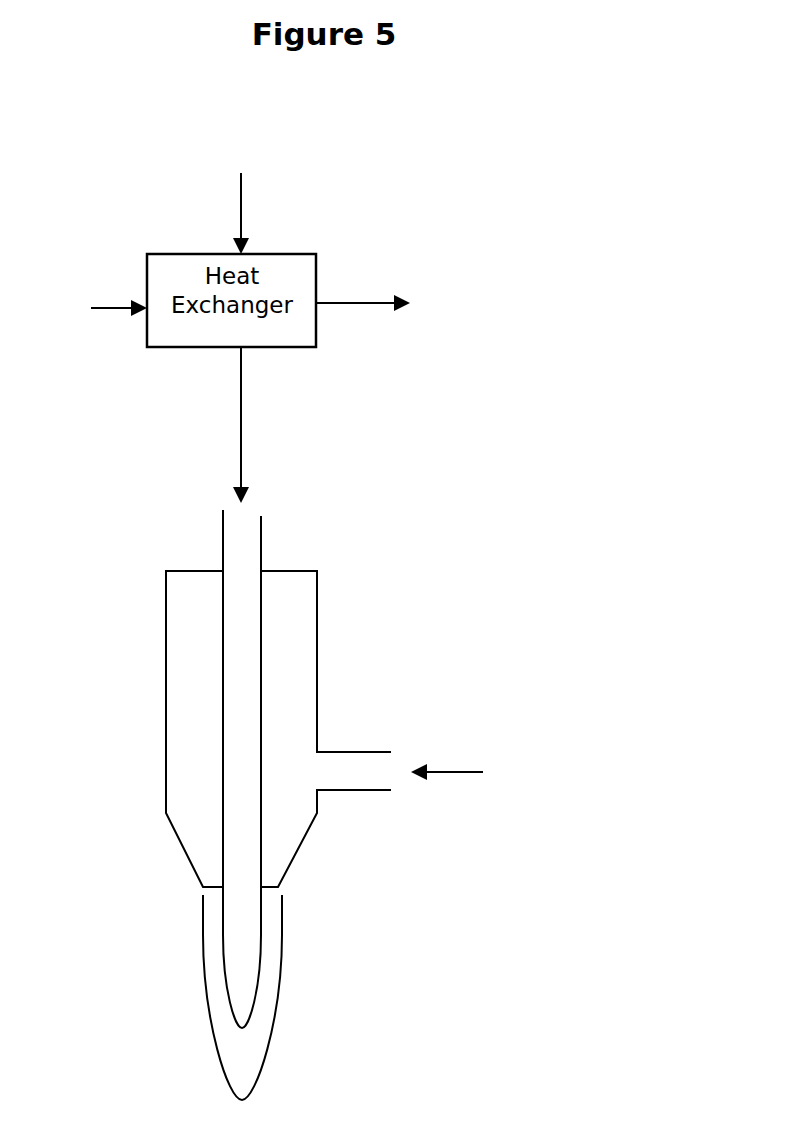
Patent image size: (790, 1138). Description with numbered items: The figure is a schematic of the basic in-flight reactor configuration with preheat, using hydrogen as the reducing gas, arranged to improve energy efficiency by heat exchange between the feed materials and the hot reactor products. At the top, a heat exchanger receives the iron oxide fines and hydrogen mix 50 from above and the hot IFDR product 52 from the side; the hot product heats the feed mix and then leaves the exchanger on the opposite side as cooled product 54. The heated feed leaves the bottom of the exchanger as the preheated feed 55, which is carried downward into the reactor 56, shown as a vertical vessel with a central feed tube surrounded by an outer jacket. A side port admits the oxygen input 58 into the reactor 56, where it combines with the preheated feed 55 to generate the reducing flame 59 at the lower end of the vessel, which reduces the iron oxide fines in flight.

The iron oxide fines and hydrogen mix 50 is at (235, 198).
The hot IFDR product 52 is at (96, 300).
The cooled product 54 is at (377, 298).
The preheated feed 55 is at (256, 425).
The reactor 56 is at (350, 638).
The oxygen input 58 is at (451, 755).
The reducing flame 59 is at (242, 997).